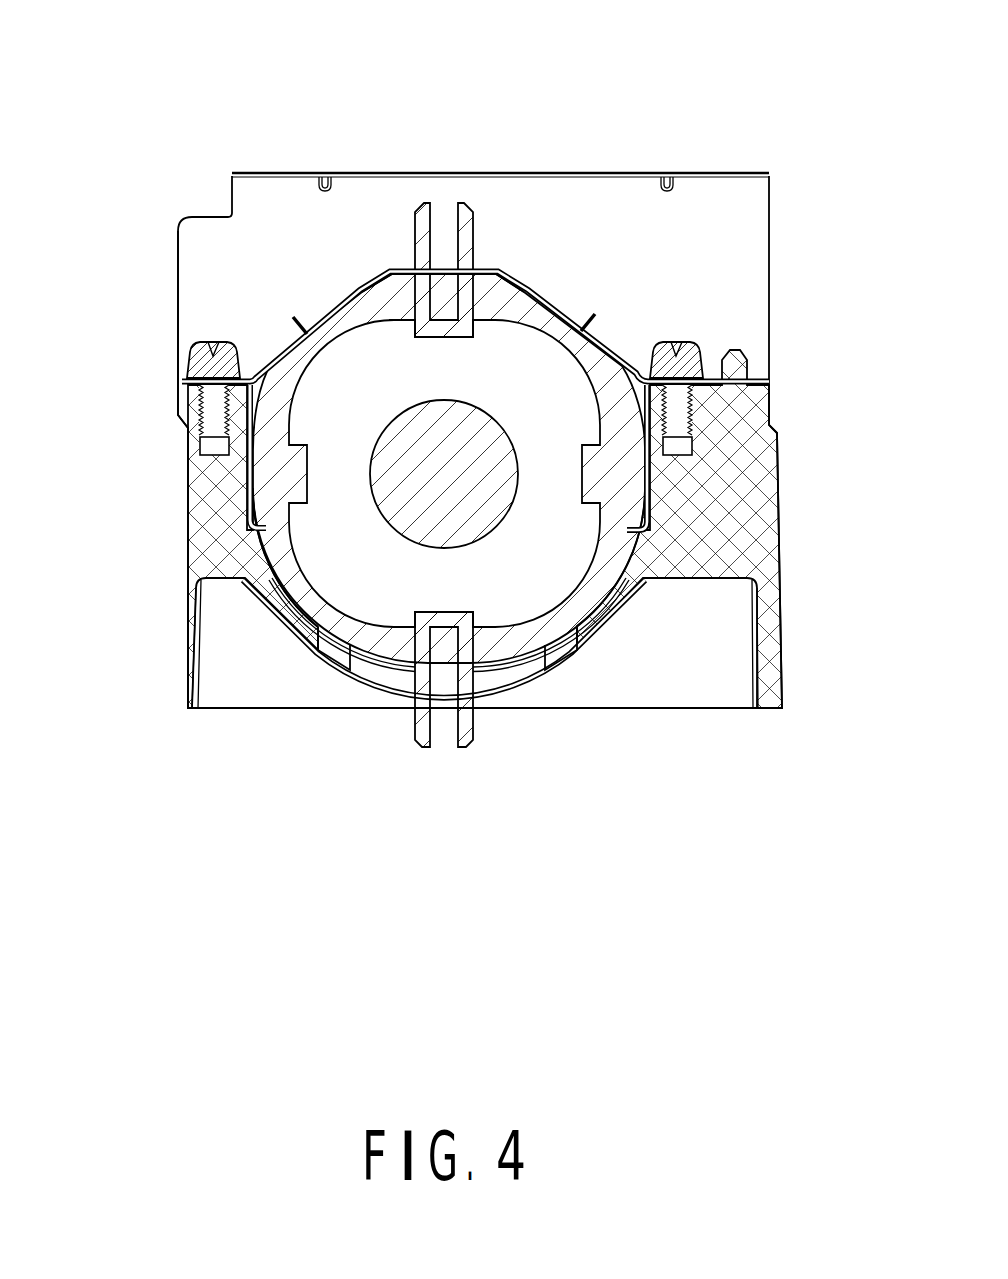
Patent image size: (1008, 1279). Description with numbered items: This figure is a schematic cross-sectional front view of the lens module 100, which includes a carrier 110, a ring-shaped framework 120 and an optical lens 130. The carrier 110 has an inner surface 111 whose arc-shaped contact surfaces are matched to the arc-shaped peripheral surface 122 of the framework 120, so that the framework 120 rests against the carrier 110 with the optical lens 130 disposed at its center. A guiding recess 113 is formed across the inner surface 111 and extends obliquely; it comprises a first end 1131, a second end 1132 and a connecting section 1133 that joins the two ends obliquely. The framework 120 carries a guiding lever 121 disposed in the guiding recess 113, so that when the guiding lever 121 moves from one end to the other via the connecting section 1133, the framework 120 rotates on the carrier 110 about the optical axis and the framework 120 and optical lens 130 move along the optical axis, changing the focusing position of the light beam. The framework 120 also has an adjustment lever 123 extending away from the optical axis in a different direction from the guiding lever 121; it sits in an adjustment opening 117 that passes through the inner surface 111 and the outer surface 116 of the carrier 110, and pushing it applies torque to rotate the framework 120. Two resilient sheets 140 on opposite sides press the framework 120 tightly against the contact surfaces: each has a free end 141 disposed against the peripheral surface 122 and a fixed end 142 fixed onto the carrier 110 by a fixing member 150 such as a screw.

The lens module 100 is at (56, 32).
The carrier 110 is at (796, 630).
The inner surface 111 is at (262, 527).
The guiding recess 113 is at (444, 758).
The first end 1131 is at (548, 658).
The second end 1132 is at (335, 655).
The connecting section 1133 is at (390, 680).
The outer surface 116 is at (621, 620).
The adjustment opening 117 is at (240, 402).
The framework 120 is at (382, 389).
The guiding lever 121 is at (300, 645).
The peripheral surface 122 is at (391, 305).
The adjustment lever 123 is at (474, 240).
The optical lens 130 is at (485, 432).
The resilient sheet 140 is at (474, 302).
The free end 141 is at (257, 376).
The fixed end 142 is at (248, 392).
The fixing member 150 is at (389, 395).